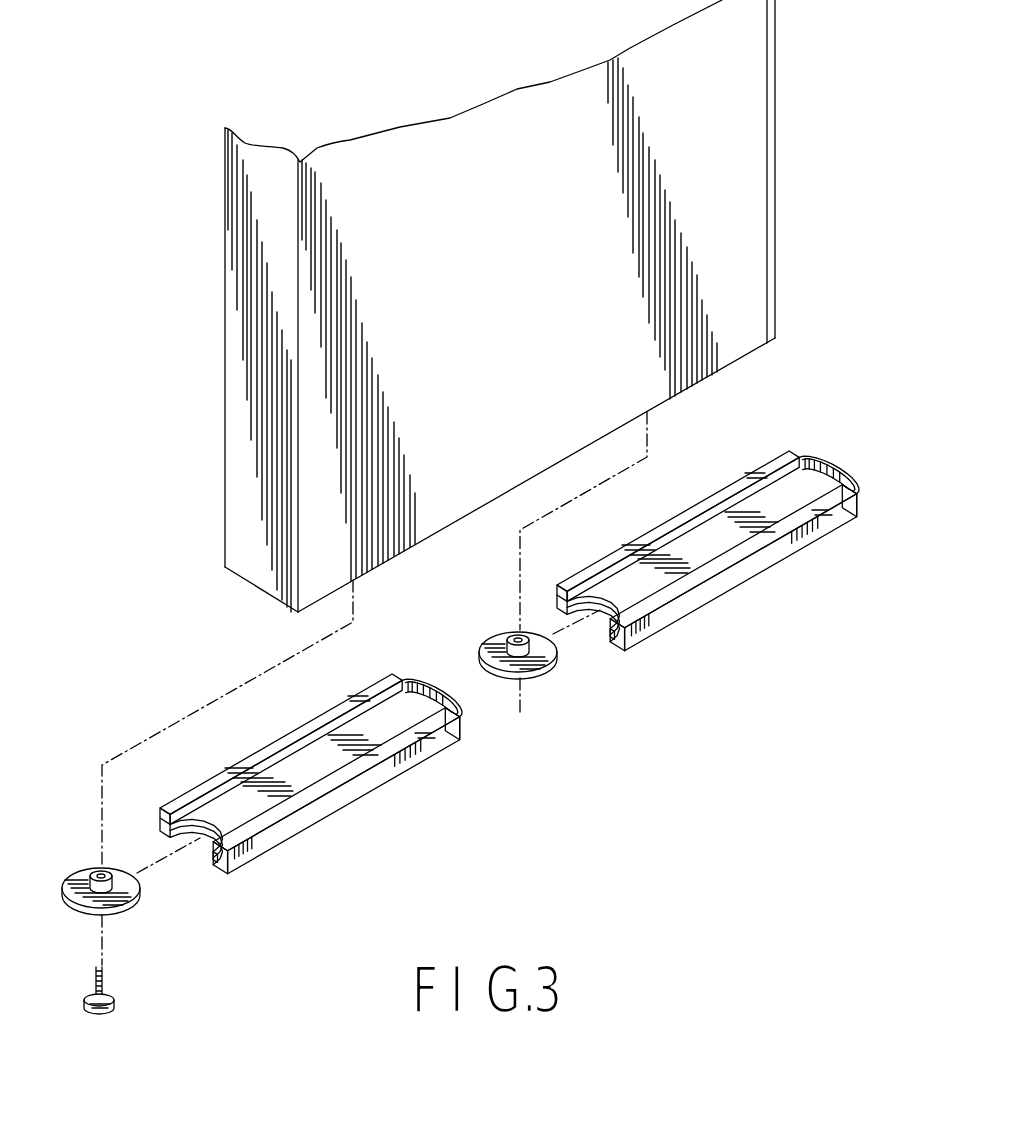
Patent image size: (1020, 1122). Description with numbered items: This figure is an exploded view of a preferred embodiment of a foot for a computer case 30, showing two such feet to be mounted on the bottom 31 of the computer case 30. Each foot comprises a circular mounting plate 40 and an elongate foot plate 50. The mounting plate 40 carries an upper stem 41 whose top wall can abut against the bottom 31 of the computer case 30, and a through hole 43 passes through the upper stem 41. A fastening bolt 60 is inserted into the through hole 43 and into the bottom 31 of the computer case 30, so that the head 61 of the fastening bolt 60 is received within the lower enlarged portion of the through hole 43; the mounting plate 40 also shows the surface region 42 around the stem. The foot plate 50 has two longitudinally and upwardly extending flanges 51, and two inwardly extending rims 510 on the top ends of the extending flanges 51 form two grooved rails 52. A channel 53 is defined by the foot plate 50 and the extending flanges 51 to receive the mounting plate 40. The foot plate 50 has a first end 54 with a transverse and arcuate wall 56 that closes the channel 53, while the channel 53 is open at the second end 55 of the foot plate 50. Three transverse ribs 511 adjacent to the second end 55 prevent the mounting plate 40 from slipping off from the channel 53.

The computer case 30 is at (528, 306).
The bottom of the computer case 31 is at (740, 360).
The circular mounting plate 40 is at (308, 755).
The upper stem 41 is at (515, 658).
The disk rim 42 is at (108, 918).
The through hole 43 is at (482, 645).
The elongate foot plate 50 is at (508, 673).
The extending flanges 51 is at (627, 642).
The grooved rails 52 is at (557, 590).
The channel 53 is at (692, 543).
The first end 54 is at (852, 493).
The second end 55 is at (587, 597).
The transverse and arcuate wall 56 is at (817, 457).
The inwardly extending rims 510 is at (663, 604).
The transverse ribs 511 is at (645, 567).
The fastening bolt 60 is at (111, 1030).
The head of the fastening bolt 61 is at (108, 1012).